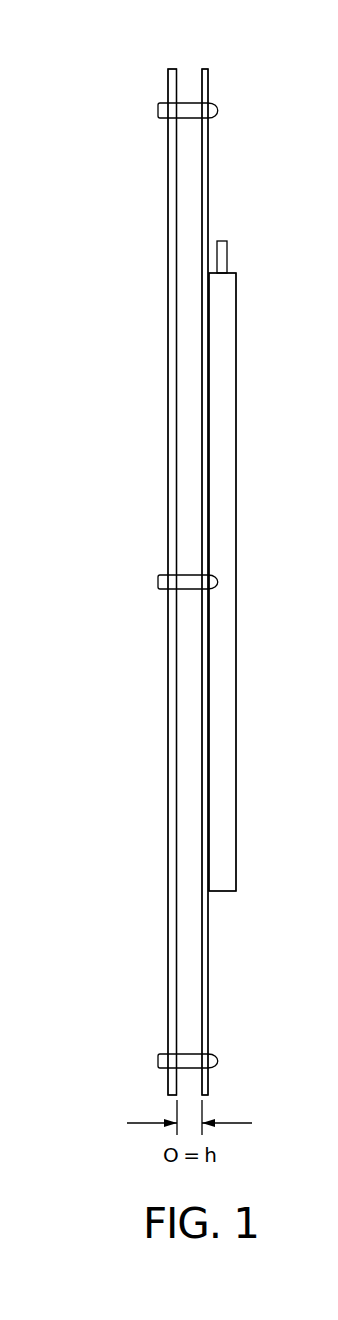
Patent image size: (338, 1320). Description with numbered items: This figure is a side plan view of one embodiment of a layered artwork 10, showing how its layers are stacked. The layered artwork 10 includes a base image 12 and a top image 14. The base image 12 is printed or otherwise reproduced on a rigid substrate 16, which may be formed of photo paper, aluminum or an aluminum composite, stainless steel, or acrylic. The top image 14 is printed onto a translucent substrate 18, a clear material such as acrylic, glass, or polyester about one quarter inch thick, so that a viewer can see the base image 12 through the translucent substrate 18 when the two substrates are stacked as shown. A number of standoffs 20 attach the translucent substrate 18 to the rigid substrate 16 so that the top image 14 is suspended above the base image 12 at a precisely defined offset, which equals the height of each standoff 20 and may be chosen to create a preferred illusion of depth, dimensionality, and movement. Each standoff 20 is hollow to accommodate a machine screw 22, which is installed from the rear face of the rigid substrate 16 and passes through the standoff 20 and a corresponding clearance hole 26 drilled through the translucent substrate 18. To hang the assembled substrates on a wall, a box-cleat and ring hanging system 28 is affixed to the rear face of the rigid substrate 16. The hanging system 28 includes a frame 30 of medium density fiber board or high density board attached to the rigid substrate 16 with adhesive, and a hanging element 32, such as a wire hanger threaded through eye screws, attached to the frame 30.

The layered artwork 10 is at (82, 402).
The base image 12 is at (202, 963).
The top image 14 is at (168, 670).
The rigid substrate 16 is at (205, 85).
The translucent substrate 18 is at (173, 281).
The standoff 20 is at (189, 581).
The machine screw 22 is at (218, 118).
The clearance hole 26 is at (158, 104).
The box-cleat and ring hanging system 28 is at (224, 895).
The frame 30 is at (222, 548).
The hanging element 32 is at (222, 252).